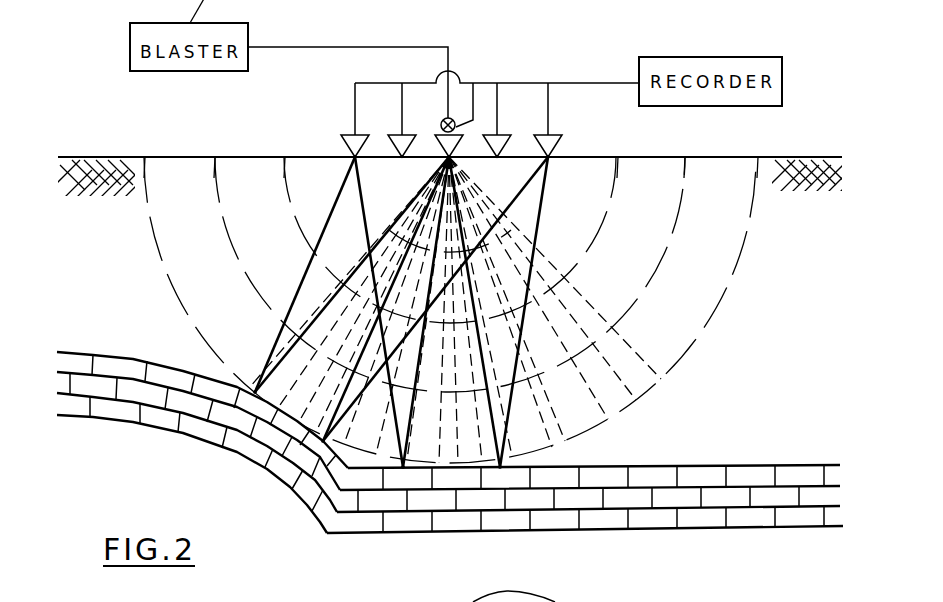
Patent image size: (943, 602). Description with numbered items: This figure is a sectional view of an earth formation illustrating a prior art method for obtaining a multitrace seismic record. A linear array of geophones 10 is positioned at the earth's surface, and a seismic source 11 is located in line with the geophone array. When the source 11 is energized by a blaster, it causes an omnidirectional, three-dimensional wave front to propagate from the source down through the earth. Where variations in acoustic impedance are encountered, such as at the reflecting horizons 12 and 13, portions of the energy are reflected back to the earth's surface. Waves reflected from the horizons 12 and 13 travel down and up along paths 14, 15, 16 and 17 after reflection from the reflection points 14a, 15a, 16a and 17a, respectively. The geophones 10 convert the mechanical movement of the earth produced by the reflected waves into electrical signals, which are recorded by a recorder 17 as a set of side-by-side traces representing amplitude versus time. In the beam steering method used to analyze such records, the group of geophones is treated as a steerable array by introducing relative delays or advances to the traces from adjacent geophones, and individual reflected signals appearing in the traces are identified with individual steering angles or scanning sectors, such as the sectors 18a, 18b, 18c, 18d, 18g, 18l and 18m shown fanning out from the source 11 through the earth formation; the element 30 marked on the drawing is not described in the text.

The geophones 10 is at (434, 135).
The seismic source 11 is at (451, 119).
The reflecting horizon 12 is at (737, 467).
The reflecting horizon 13 is at (103, 352).
The path 14 is at (493, 230).
The reflection point 14a is at (502, 469).
The path 15 is at (414, 408).
The reflection point 15a is at (403, 469).
The path 16 is at (400, 387).
The reflection point 16a is at (322, 443).
The path 17 is at (712, 57).
The reflection point 17a is at (252, 395).
The scanning sector 18a is at (675, 383).
The scanning sector 18b is at (642, 407).
The scanning sector 18c is at (604, 430).
The scanning sector 18d is at (570, 450).
The scanning sector 18g is at (458, 455).
The scanning sector 18l is at (283, 403).
The scanning sector 18m is at (240, 384).
The earth formation 30 is at (817, 187).